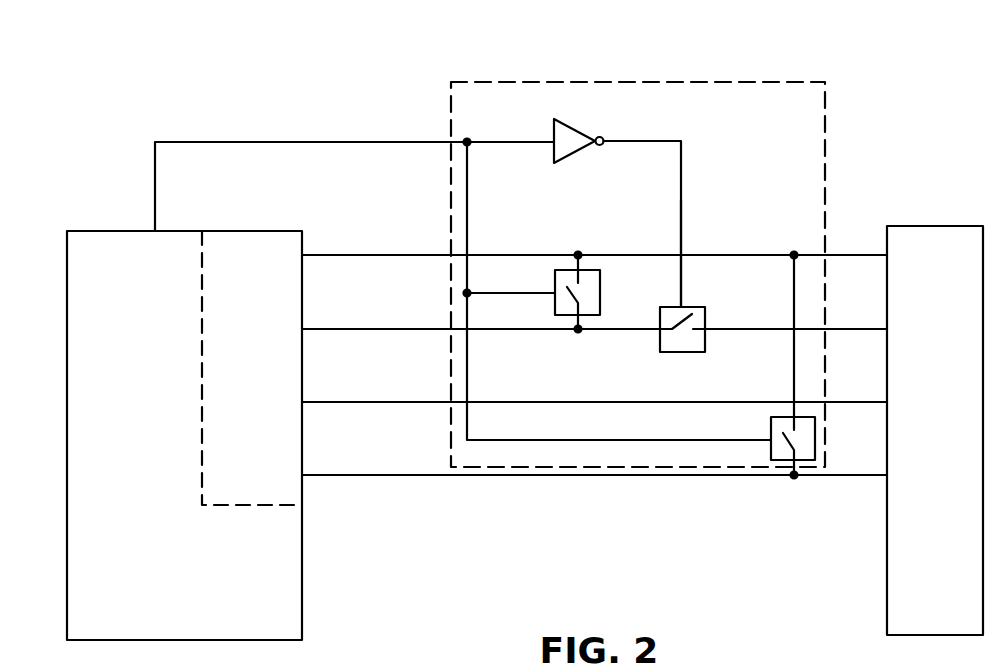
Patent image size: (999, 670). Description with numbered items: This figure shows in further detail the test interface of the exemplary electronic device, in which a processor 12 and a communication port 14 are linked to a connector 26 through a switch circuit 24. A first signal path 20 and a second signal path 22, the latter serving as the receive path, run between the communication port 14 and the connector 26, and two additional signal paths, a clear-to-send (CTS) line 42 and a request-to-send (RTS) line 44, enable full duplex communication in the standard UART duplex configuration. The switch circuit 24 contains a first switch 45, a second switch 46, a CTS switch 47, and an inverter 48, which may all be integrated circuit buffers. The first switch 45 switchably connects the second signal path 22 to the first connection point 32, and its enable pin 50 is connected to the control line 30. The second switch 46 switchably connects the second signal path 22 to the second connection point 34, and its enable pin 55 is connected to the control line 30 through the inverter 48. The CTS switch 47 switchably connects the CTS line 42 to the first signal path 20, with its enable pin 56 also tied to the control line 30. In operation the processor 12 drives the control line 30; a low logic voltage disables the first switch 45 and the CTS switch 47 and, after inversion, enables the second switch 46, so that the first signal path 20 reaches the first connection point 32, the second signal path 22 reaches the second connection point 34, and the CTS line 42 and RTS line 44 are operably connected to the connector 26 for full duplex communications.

The processor 12 is at (117, 229).
The communication port 14 is at (244, 237).
The first signal path 20 is at (375, 254).
The second signal path 22 is at (375, 328).
The switch circuit 24 is at (630, 81).
The connector 26 is at (933, 225).
The control line 30 is at (293, 141).
The first connection point 32 is at (886, 254).
The second connection point 34 is at (886, 328).
The clear-to-send (CTS) line 42 is at (375, 401).
The request-to-send (RTS) line 44 is at (378, 474).
The first switch 45 is at (592, 269).
The second switch 46 is at (695, 306).
The CTS switch 47 is at (780, 416).
The inverter 48 is at (577, 152).
The enable pin 50 is at (555, 292).
The enable pin 55 is at (678, 306).
The enable pin 56 is at (771, 439).